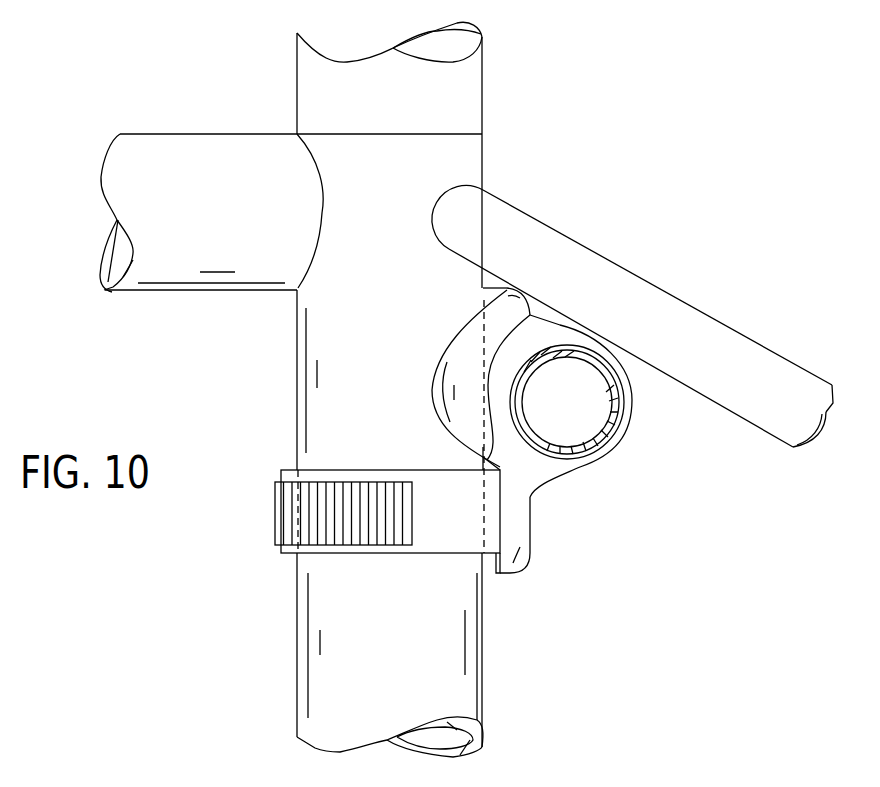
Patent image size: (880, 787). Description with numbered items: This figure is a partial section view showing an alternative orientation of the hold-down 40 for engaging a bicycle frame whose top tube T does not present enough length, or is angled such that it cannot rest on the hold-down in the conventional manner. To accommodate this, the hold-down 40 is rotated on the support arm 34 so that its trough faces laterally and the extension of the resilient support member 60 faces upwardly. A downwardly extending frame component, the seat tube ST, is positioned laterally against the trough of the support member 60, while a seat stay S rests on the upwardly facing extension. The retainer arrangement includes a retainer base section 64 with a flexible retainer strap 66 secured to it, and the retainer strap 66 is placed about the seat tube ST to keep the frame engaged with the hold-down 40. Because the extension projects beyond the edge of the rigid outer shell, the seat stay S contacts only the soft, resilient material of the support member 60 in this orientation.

The support arm 34 is at (605, 437).
The hold-down 40 is at (568, 502).
The resilient support member 60 is at (428, 392).
The retainer base section 64 is at (538, 535).
The retainer strap 66 is at (292, 557).
The top tube T is at (138, 290).
The seat stay S is at (720, 320).
The seat tube ST is at (298, 687).